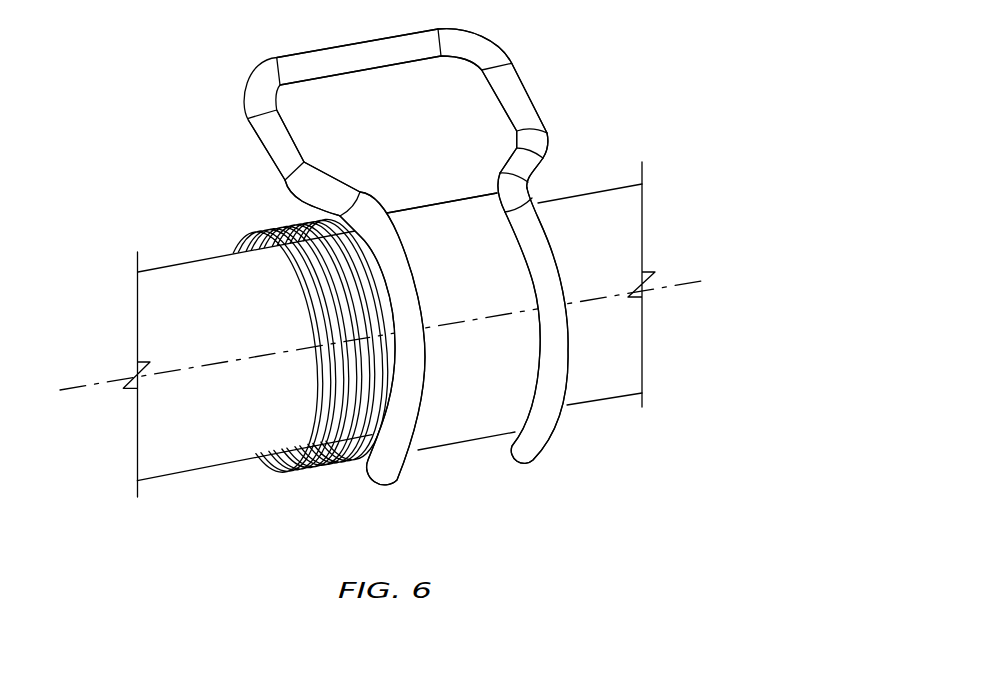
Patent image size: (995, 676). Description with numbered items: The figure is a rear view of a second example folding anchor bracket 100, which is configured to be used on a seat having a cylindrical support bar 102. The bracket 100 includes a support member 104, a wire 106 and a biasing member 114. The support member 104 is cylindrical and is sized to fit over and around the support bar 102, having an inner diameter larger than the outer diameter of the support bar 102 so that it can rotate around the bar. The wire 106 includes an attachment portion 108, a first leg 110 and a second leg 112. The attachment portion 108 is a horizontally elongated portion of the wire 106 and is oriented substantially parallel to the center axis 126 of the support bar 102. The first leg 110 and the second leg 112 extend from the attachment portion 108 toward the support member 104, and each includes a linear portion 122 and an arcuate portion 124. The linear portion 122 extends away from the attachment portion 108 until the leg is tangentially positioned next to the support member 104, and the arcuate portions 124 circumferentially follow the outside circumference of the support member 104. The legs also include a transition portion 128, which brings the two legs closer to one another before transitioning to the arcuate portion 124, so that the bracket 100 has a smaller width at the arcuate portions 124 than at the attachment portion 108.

The folding anchor bracket 100 is at (414, 247).
The support bar 102 is at (207, 457).
The support member 104 is at (480, 210).
The wire 106 is at (477, 45).
The attachment portion 108 is at (354, 52).
The first leg 110 is at (507, 73).
The second leg 112 is at (263, 127).
The biasing member 114 is at (255, 228).
The linear portion 122 is at (528, 117).
The arcuate portion 124 is at (478, 336).
The center axis 126 is at (693, 283).
The transition portion 128 is at (530, 164).